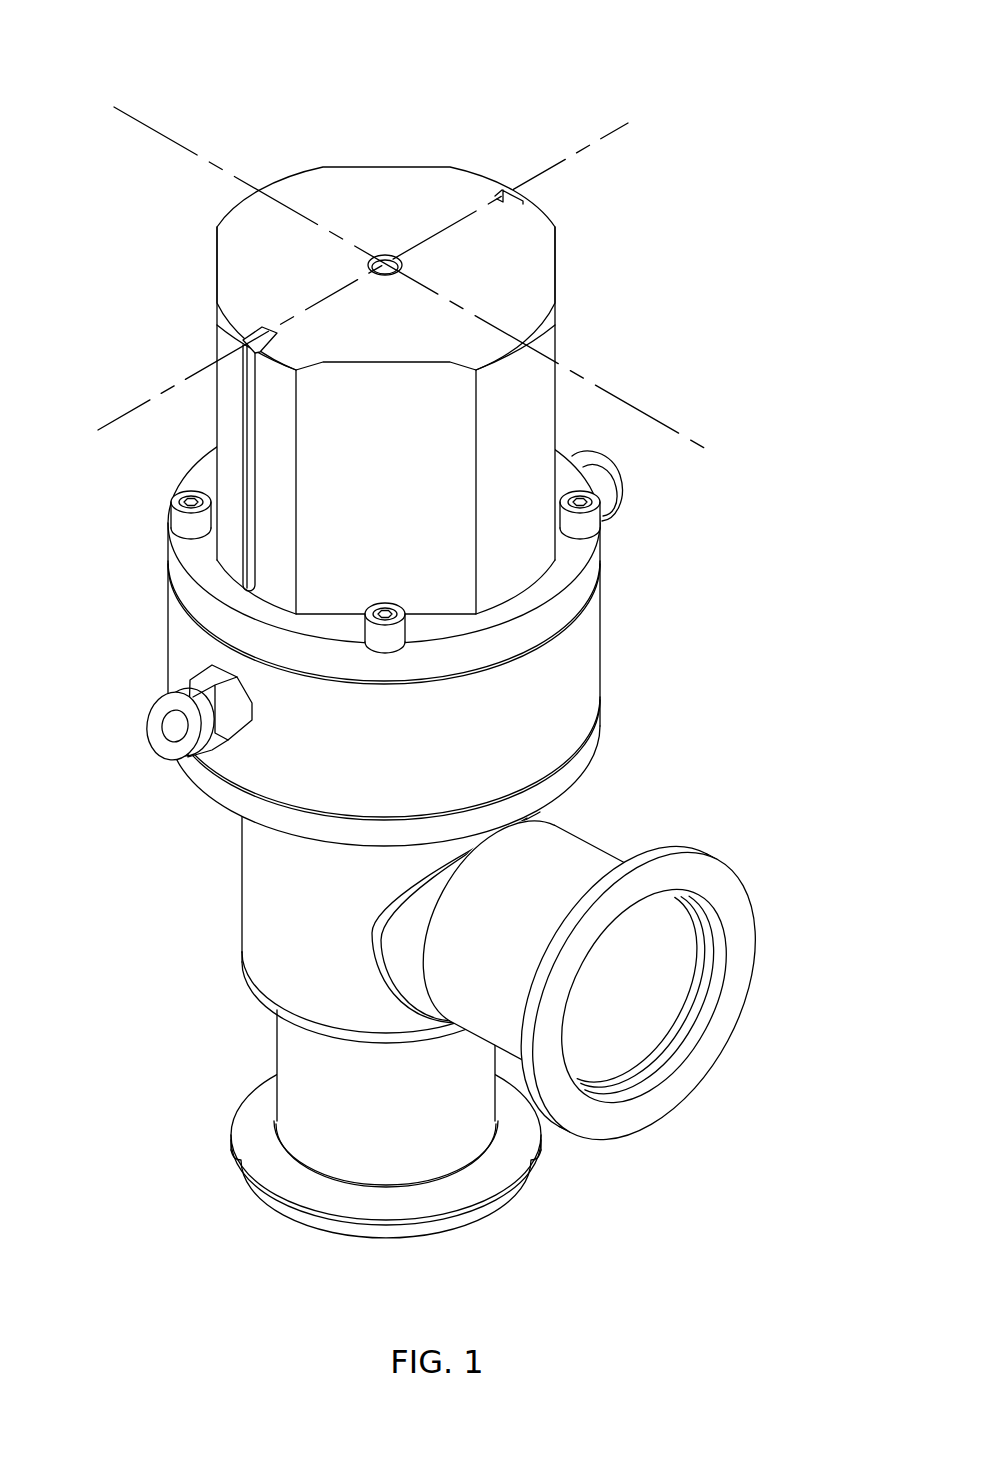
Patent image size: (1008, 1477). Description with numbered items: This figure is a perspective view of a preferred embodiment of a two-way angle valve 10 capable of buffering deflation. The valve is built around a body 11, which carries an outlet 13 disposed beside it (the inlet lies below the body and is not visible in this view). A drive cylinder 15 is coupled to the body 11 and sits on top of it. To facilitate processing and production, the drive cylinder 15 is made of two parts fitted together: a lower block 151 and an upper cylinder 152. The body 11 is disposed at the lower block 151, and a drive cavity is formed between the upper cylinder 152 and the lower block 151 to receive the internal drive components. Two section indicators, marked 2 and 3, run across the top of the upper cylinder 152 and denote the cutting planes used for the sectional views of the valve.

The two-way angle valve 10 is at (464, 622).
The body 11 is at (242, 888).
The outlet 13 is at (676, 970).
The drive cylinder 15 is at (465, 506).
The lower block 151 is at (607, 683).
The upper cylinder 152 is at (557, 343).
The section line 2- 2 is at (140, 123).
The section line 3- 3 is at (110, 422).